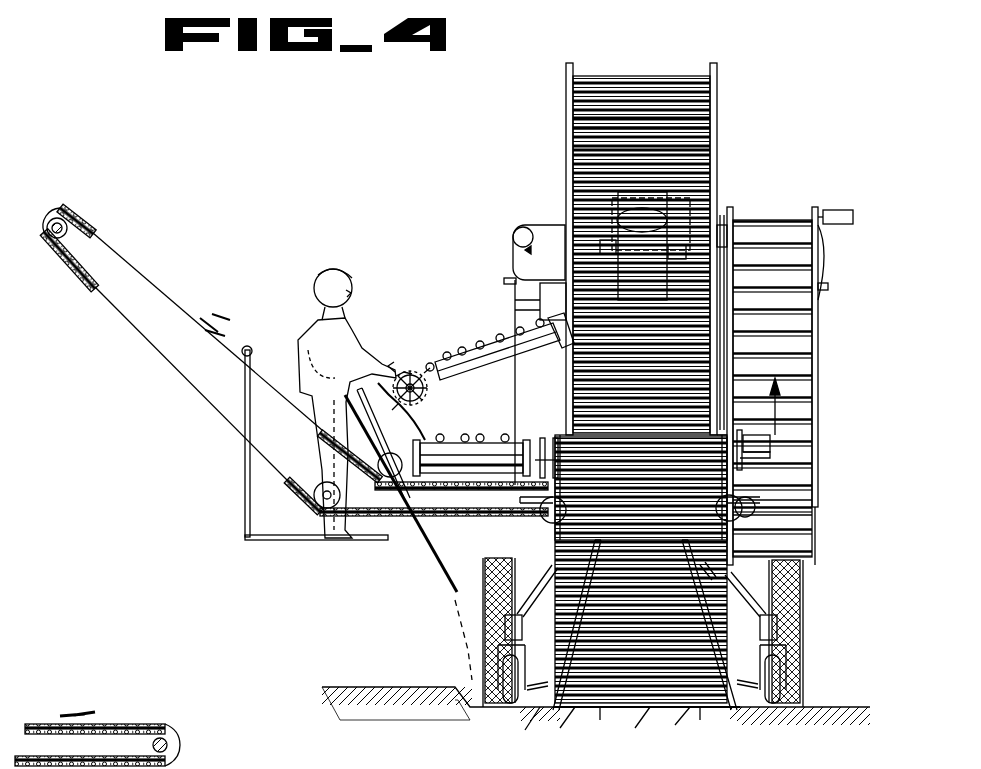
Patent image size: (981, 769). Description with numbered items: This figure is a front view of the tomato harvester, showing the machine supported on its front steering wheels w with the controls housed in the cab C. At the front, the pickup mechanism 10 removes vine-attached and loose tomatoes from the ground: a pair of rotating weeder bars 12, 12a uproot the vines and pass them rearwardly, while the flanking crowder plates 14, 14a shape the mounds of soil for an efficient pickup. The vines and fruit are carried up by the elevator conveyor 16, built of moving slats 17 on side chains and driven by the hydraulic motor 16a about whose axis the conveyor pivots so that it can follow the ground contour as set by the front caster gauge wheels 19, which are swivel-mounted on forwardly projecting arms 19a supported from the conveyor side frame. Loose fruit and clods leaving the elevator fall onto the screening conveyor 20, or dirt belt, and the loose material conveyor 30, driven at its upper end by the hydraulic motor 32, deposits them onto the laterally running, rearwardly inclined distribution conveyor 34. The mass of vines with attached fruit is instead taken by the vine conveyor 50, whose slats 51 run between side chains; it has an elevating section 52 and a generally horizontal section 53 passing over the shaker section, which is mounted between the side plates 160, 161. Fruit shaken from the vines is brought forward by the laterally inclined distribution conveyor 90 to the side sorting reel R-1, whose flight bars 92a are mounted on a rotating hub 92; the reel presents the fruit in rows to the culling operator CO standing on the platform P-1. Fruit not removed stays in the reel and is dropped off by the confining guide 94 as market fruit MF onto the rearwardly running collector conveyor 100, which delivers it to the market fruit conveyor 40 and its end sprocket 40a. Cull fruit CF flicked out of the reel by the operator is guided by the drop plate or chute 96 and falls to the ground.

The pickup mechanism 10 is at (592, 712).
The rotating weeder bar 12 is at (633, 710).
The rotating weeder bar 12a is at (696, 710).
The crowder plate 14 is at (556, 712).
The crowder plate 14a is at (725, 702).
The elevator conveyor 16 is at (558, 552).
The hydraulic motor 16a is at (772, 445).
The moving slat 17 is at (712, 580).
The front caster gauge wheel 19 is at (785, 692).
The forwardly projecting arm 19a is at (778, 628).
The screening conveyor 20 is at (750, 503).
The loose material conveyor 30 is at (747, 212).
The hydraulic motor 32 is at (840, 212).
The distribution conveyor 34 is at (540, 226).
The market fruit conveyor 40 is at (490, 518).
The conveyor end sprocket 40a is at (80, 222).
The vine conveyor 50 is at (700, 149).
The slat 51 is at (588, 156).
The elevating section 52 is at (700, 117).
The horizontal section 53 is at (640, 78).
The distribution conveyor 90 is at (483, 342).
The rotating hub 92 is at (420, 400).
The flight bar 92a is at (430, 392).
The confining guide 94 is at (383, 444).
The drop plate or chute 96 is at (425, 545).
The collector conveyor 100 is at (505, 452).
The side plate 160 is at (566, 72).
The side plate 161 is at (717, 70).
The cab C is at (680, 210).
The culling operator CO is at (318, 274).
The cull fruit CF is at (452, 583).
The market fruit MF is at (450, 438).
The platform P-1 is at (270, 540).
The side sorting reel R-1 is at (400, 368).
The front steering wheel w is at (792, 602).